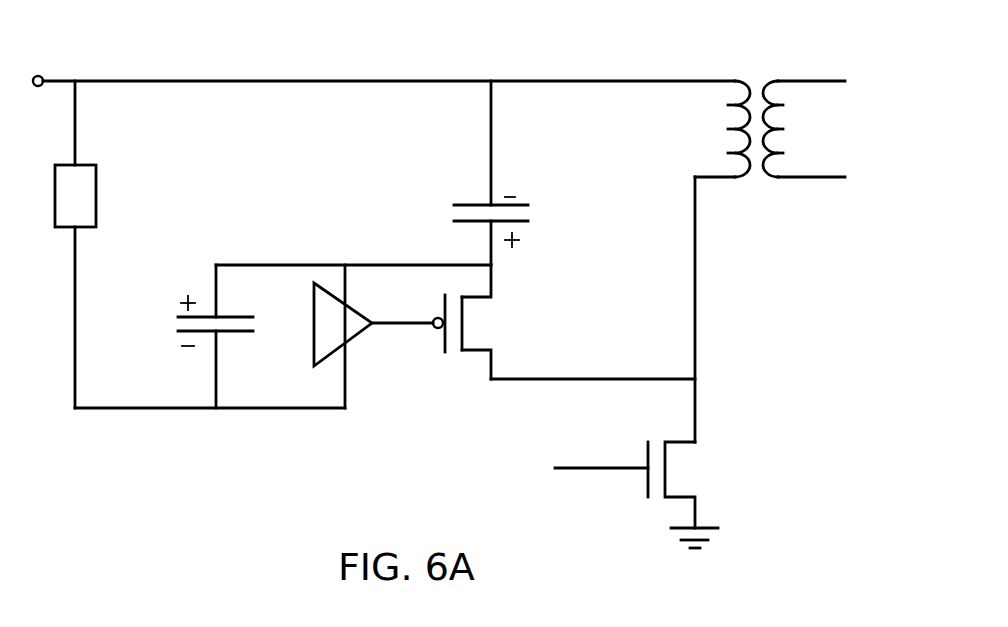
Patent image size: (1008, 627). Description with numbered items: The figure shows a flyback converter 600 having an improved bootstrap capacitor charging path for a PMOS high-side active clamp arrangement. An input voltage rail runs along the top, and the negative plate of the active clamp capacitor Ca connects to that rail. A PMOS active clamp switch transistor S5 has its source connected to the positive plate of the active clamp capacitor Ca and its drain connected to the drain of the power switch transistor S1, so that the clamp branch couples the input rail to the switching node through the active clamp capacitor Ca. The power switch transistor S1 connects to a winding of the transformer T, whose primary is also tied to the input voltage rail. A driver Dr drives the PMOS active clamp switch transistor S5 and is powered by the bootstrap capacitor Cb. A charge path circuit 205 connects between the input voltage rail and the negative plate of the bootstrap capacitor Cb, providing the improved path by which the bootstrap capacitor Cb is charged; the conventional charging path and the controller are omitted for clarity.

The flyback converter 600 is at (478, 59).
The charge path circuit 205 is at (96, 196).
The active clamp capacitor Ca is at (514, 173).
The bootstrap capacitor Cb is at (196, 336).
The driver Dr is at (378, 324).
The PMOS active clamp switch transistor S5 is at (483, 322).
The power switch transistor S1 is at (639, 495).
The transformer T is at (770, 113).